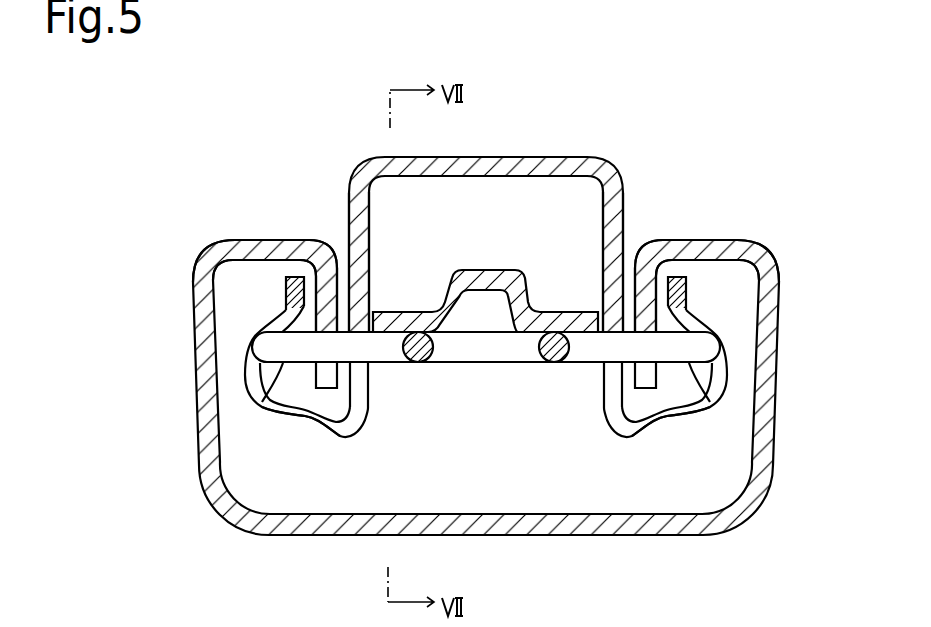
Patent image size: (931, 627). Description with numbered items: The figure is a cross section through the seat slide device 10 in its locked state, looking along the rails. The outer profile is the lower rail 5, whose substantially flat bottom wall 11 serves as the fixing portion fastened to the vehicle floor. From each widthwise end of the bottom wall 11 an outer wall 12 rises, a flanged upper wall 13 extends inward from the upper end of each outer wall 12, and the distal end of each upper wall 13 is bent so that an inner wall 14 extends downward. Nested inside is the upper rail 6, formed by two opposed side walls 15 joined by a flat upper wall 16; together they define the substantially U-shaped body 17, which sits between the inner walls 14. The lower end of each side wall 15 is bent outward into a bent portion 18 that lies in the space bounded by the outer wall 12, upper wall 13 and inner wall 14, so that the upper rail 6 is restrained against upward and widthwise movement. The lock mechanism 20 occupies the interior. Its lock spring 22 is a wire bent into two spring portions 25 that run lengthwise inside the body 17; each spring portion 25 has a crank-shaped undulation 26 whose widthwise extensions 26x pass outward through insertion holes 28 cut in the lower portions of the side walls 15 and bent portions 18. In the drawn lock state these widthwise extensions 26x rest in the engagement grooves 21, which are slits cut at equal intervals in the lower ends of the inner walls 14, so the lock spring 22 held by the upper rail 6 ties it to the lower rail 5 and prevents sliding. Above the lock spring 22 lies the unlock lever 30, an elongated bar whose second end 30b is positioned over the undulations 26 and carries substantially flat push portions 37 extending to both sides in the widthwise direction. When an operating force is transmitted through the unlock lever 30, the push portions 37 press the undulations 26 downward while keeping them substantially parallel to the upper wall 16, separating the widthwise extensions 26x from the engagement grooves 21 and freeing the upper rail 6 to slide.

The lower rail 5 is at (482, 390).
The upper rail 6 is at (503, 224).
The seat slide device 10 is at (482, 327).
The bottom wall 11 is at (483, 538).
The outer wall 12 is at (768, 248).
The upper wall 13 is at (259, 244).
The inner wall 14 is at (486, 418).
The side wall 15 is at (354, 219).
The upper wall 16 is at (471, 157).
The body 17 is at (608, 165).
The bent portion 18 is at (287, 289).
The lock mechanism 20 is at (197, 99).
The engagement groove 21 is at (328, 389).
The lock spring 22 is at (486, 377).
The spring portion 25 is at (418, 363).
The undulation 26 is at (490, 407).
The widthwise extension 26x is at (257, 412).
The insertion hole 28 is at (340, 438).
The unlock lever 30 is at (485, 269).
The second end 30b is at (495, 268).
The push portion 37 is at (395, 313).